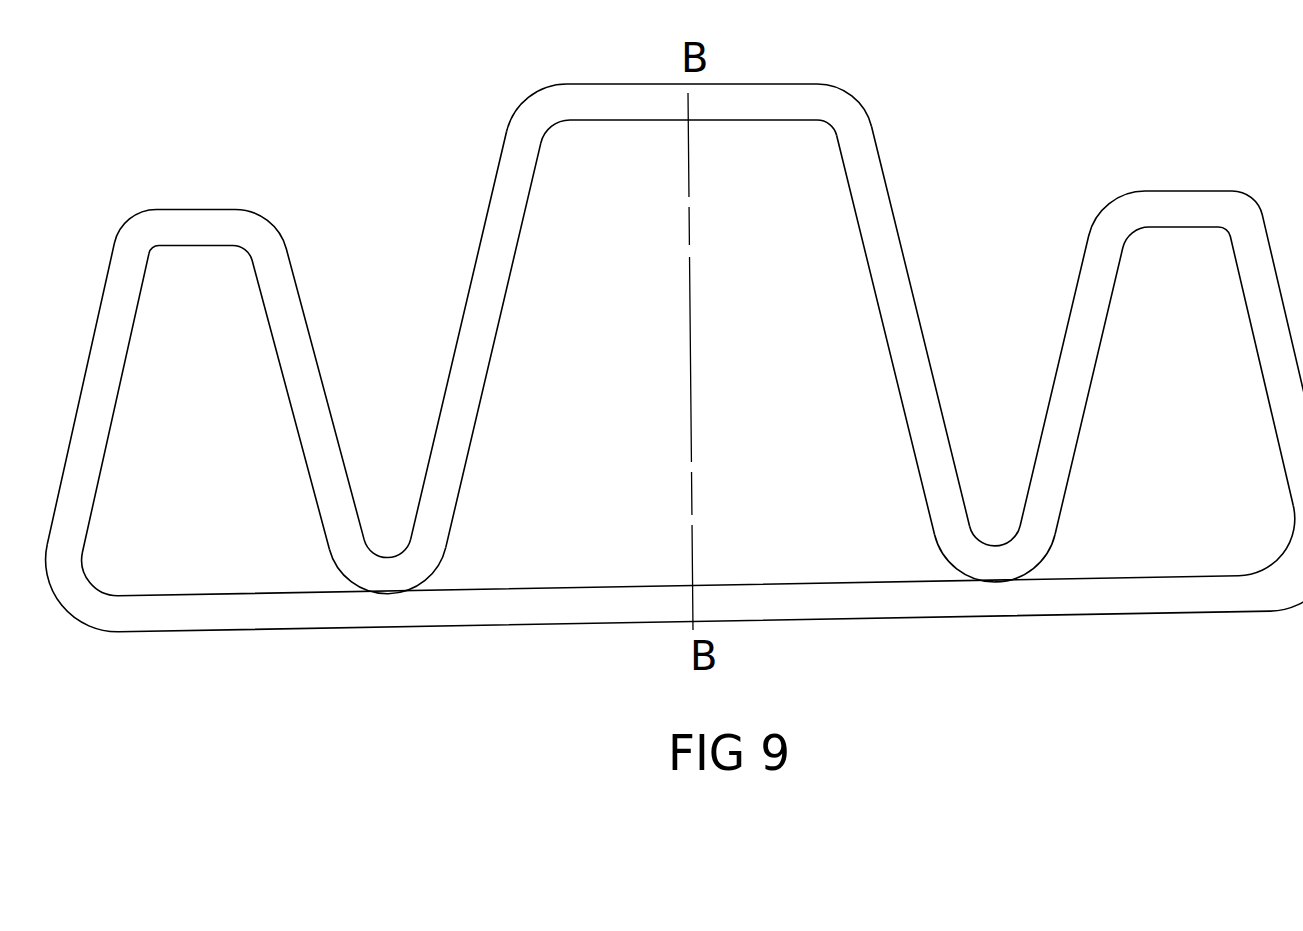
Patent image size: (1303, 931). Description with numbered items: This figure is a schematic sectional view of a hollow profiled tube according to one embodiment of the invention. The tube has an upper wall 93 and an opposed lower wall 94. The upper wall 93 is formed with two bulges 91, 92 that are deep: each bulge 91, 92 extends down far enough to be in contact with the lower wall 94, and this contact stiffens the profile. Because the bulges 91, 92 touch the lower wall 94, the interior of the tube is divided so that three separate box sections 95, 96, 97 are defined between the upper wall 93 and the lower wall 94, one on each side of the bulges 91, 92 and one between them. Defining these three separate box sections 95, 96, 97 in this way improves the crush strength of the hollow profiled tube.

The bulge 91 is at (418, 556).
The bulge 92 is at (1035, 538).
The upper wall 93 is at (723, 97).
The lower wall 94 is at (867, 607).
The box section 95 is at (205, 381).
The box section 96 is at (690, 277).
The box section 97 is at (1161, 362).